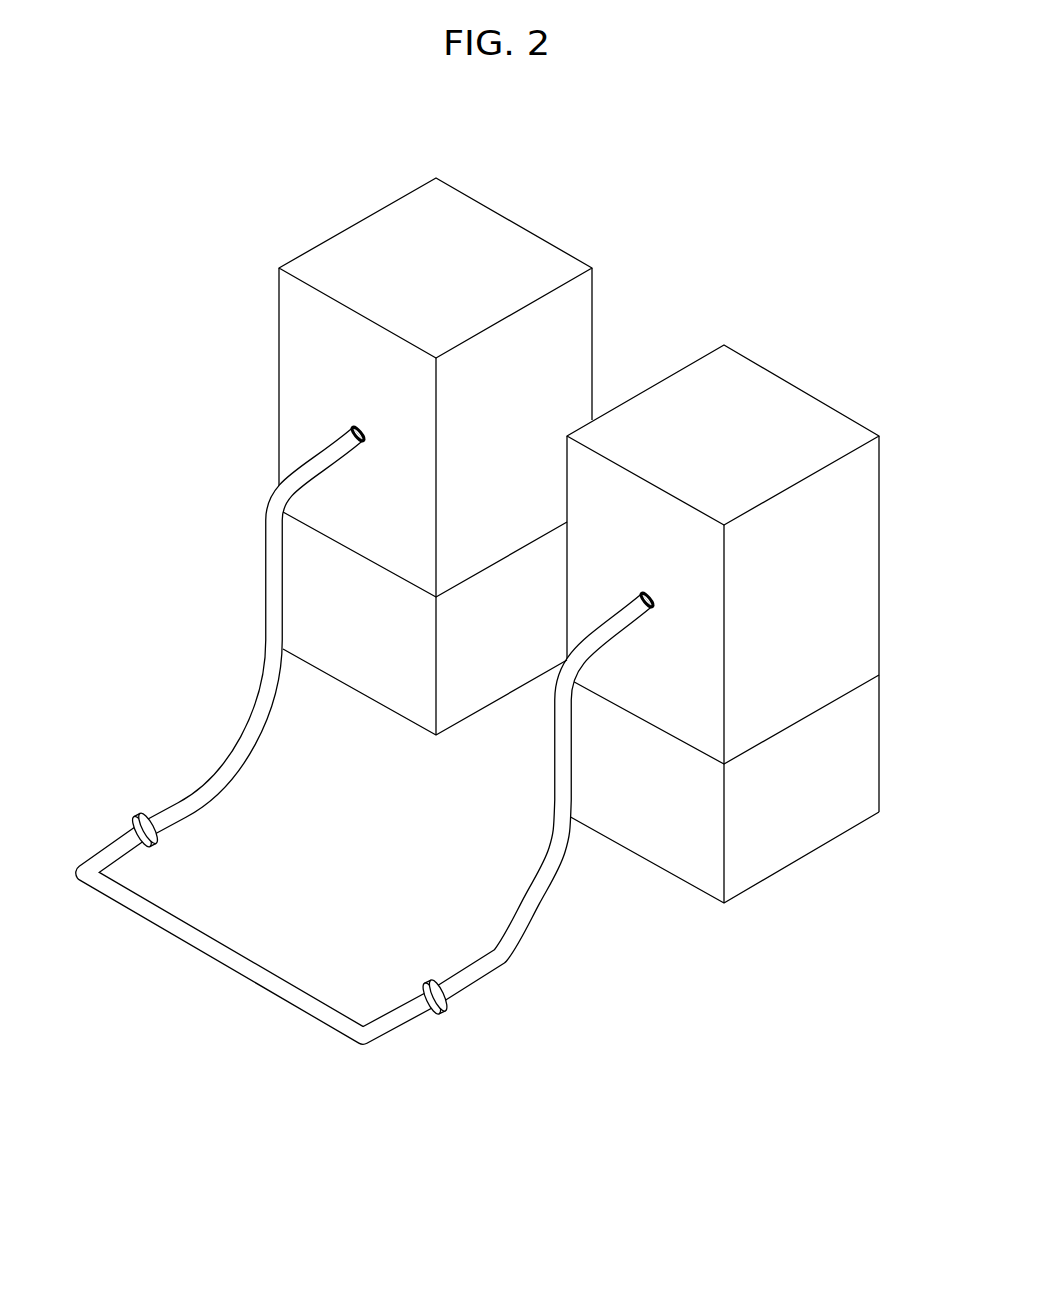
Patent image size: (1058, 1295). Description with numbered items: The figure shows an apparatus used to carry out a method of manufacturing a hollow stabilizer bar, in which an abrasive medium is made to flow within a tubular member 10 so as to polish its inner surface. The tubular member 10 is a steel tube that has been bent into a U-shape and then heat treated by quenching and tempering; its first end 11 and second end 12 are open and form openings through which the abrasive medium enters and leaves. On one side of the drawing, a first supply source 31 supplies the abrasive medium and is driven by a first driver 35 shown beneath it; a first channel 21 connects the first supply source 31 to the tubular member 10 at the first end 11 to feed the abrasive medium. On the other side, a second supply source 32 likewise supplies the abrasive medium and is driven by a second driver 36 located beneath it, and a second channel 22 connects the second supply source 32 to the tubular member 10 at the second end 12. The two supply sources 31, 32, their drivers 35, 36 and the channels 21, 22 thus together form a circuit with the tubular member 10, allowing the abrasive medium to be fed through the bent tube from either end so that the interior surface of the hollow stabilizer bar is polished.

The tubular member 10 is at (219, 946).
The first end 11 is at (457, 1012).
The second end 12 is at (123, 820).
The first channel 21 is at (535, 913).
The second channel 22 is at (270, 682).
The first supply source 31 is at (857, 560).
The second supply source 32 is at (298, 361).
The first driver 35 is at (857, 756).
The second driver 36 is at (298, 583).